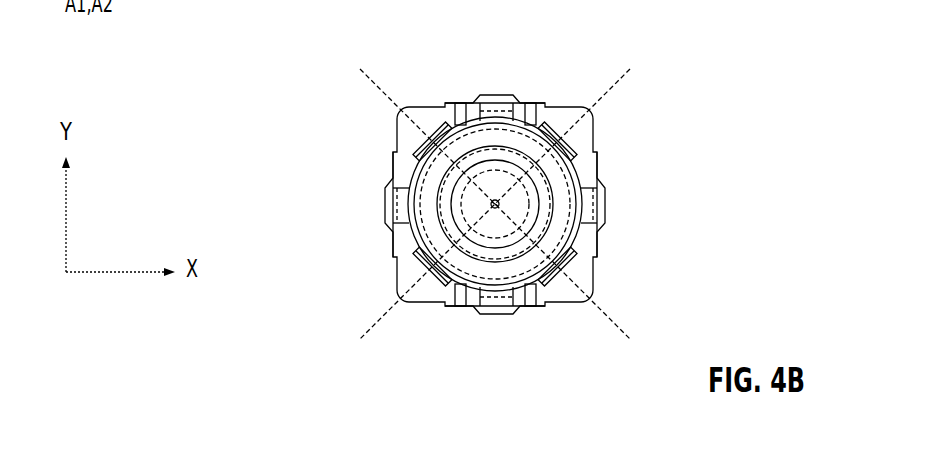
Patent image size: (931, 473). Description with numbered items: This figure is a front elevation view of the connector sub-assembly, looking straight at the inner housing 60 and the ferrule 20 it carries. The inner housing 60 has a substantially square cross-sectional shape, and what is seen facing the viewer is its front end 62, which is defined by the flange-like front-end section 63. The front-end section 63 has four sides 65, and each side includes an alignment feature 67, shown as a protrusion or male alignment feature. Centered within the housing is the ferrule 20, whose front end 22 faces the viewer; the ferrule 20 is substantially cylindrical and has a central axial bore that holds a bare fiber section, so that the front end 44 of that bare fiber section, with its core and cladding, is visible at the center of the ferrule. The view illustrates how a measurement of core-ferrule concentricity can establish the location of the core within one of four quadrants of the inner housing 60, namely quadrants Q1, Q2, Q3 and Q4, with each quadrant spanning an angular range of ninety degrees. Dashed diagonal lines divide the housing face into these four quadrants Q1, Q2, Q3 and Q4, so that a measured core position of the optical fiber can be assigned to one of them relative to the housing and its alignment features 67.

The ferrule 20 is at (533, 218).
The front end 22 is at (508, 183).
The front end 44 is at (493, 212).
The inner housing 60 is at (431, 103).
The front end 62 is at (423, 285).
The front-end section 63 is at (616, 112).
The sides 65 is at (561, 121).
The alignment feature 67 is at (502, 108).
The quadrant Q1 is at (505, 57).
The quadrant Q2 is at (695, 229).
The quadrant Q3 is at (510, 381).
The quadrant Q4 is at (327, 224).